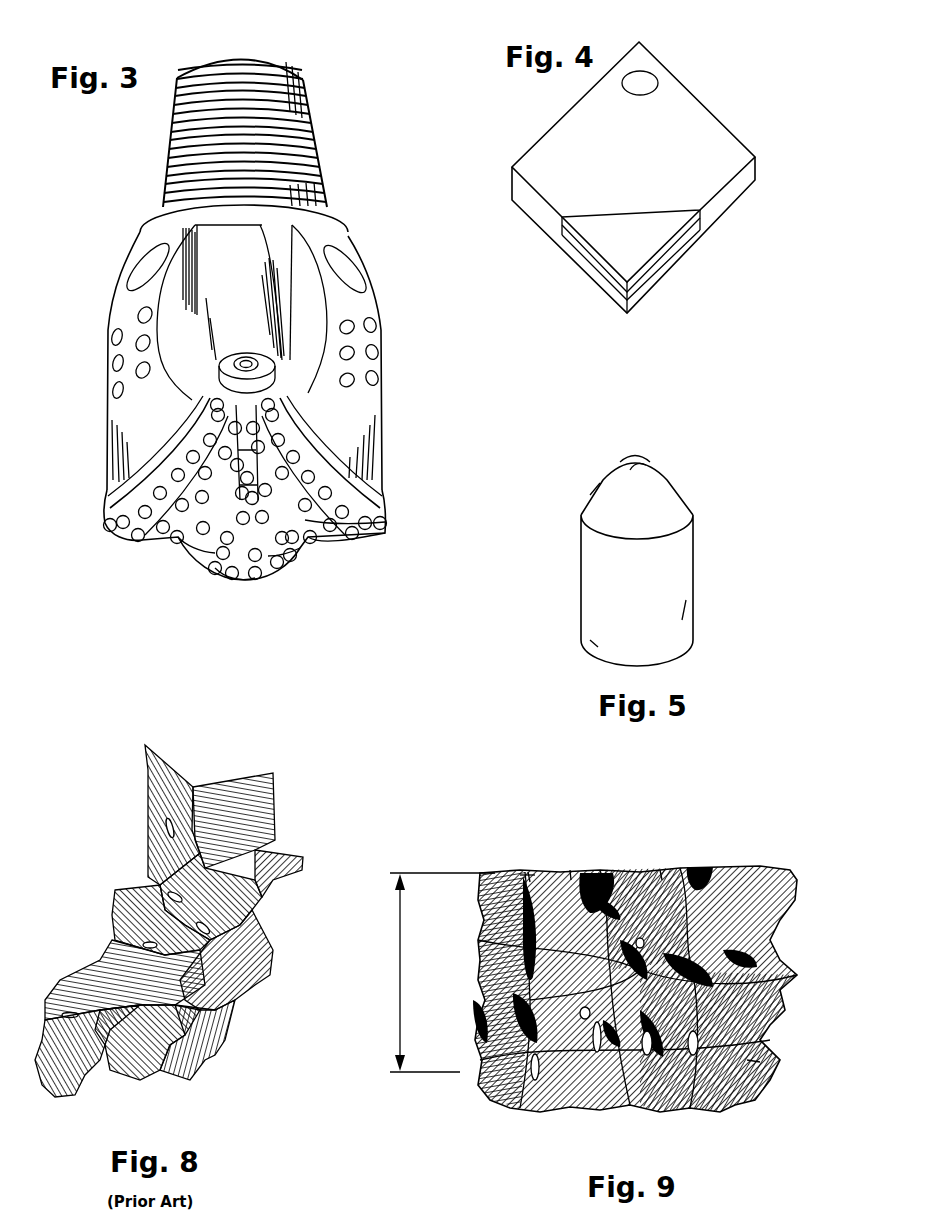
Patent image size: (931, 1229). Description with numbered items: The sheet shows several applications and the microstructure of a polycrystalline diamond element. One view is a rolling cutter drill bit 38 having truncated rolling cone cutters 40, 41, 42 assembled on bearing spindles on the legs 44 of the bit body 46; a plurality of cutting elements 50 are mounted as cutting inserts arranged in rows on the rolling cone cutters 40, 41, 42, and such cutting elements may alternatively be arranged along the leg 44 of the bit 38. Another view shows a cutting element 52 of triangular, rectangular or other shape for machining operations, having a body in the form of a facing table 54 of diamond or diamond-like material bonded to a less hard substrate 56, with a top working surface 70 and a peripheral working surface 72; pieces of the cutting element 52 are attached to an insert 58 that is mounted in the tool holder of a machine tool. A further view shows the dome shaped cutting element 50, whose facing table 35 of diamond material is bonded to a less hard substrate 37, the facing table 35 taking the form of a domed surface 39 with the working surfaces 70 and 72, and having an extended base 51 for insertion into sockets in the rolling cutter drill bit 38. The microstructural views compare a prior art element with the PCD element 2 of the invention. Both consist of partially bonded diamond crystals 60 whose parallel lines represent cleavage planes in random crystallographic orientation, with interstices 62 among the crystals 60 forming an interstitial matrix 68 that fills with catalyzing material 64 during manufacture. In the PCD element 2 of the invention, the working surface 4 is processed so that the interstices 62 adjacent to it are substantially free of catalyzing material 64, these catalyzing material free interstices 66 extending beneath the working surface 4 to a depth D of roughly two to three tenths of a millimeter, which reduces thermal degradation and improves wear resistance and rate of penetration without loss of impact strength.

In FIG. 3, the rolling cutter drill bit 38 is at (358, 193).
In FIG. 3, the bit body 46 is at (160, 225).
In FIG. 3, the leg 44 is at (120, 303).
In FIG. 3, the cutting element 50 is at (115, 365).
In FIG. 5, the cutting element 50 is at (704, 533).
In FIG. 3, the rolling cone cutter 40 is at (117, 508).
In FIG. 3, the rolling cone cutter 42 is at (365, 533).
In FIG. 3, the rolling cone cutter 41 is at (243, 570).
In FIG. 4, the insert 58 is at (697, 128).
In FIG. 4, the top working surface 70 is at (670, 223).
In FIG. 5, the top working surface 70 is at (643, 462).
In FIG. 4, the substrate 56 is at (670, 260).
In FIG. 4, the cutting element 52 is at (595, 228).
In FIG. 4, the peripheral working surface 72 is at (593, 253).
In FIG. 5, the peripheral working surface 72 is at (593, 488).
In FIG. 9, the peripheral working surface 72 is at (528, 872).
In FIG. 4, the facing table 54 is at (620, 265).
In FIG. 5, the facing table 35 is at (675, 493).
In FIG. 5, the domed surface 39 is at (633, 449).
In FIG. 5, the substrate 37 is at (682, 620).
In FIG. 5, the extended base 51 is at (598, 647).
In FIG. 8, the diamond crystals 60 is at (225, 785).
In FIG. 9, the diamond crystals 60 is at (747, 917).
In FIG. 8, the interstices 62 is at (148, 830).
In FIG. 9, the interstices 62 is at (747, 1060).
In FIG. 8, the catalyzing material 64 is at (265, 887).
In FIG. 9, the catalyzing material 64 is at (640, 1107).
In FIG. 8, the interstitial matrix 68 is at (205, 930).
In FIG. 9, the interstitial matrix 68 is at (660, 870).
In FIG. 9, the catalyzing material free interstices 66 is at (700, 868).
In FIG. 9, the PCD element 2 is at (492, 871).
In FIG. 9, the working surface 4 is at (570, 870).